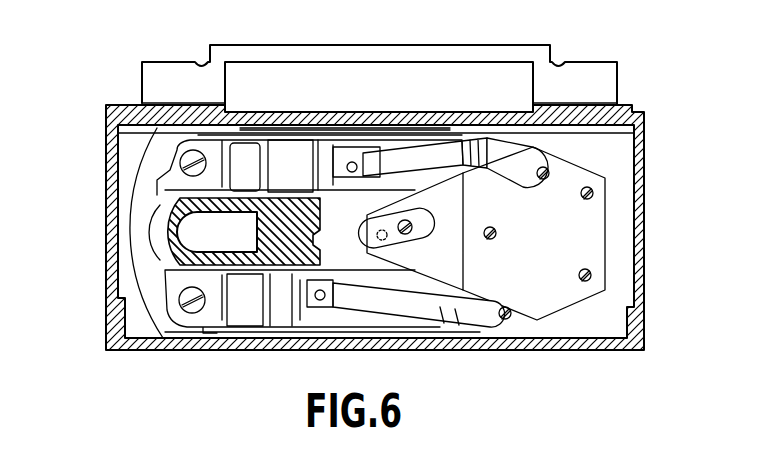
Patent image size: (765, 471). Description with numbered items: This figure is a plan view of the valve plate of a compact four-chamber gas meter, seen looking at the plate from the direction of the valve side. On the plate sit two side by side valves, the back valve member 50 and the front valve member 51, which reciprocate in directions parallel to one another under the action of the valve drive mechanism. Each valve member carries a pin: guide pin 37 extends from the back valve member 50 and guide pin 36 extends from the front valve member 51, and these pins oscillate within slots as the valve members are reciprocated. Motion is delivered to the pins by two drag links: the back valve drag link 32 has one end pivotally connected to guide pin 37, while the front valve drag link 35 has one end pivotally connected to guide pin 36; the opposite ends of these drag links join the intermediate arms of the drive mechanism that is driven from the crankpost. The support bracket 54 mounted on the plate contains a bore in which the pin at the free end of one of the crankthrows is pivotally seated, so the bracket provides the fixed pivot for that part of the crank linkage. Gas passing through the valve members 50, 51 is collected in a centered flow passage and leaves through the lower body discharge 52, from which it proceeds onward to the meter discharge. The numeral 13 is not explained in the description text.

The base plate 13 is at (200, 318).
The back valve drag link 32 is at (427, 323).
The front valve drag link 35 is at (462, 138).
The guide pin 36 is at (353, 161).
The guide pin 37 is at (320, 300).
The back valve member 50 is at (248, 325).
The front valve member 51 is at (292, 150).
The lower body discharge 52 is at (190, 235).
The support bracket 54 is at (607, 213).